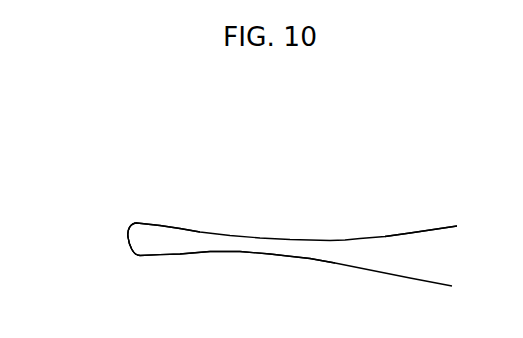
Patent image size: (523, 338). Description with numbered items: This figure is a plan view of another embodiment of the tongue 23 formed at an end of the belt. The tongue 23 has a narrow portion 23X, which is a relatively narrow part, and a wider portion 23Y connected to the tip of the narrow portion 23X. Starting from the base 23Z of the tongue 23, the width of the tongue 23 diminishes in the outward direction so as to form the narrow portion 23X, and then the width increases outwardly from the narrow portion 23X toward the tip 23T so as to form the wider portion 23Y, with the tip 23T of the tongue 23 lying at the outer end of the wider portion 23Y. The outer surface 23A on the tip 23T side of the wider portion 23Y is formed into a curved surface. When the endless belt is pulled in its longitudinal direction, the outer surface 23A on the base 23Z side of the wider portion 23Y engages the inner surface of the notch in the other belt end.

The tongue 23 is at (225, 198).
The outer surface 23A is at (160, 225).
The tip 23T is at (128, 231).
The wider portion 23Y is at (143, 250).
The narrow portion 23X is at (265, 248).
The base 23Z is at (440, 228).